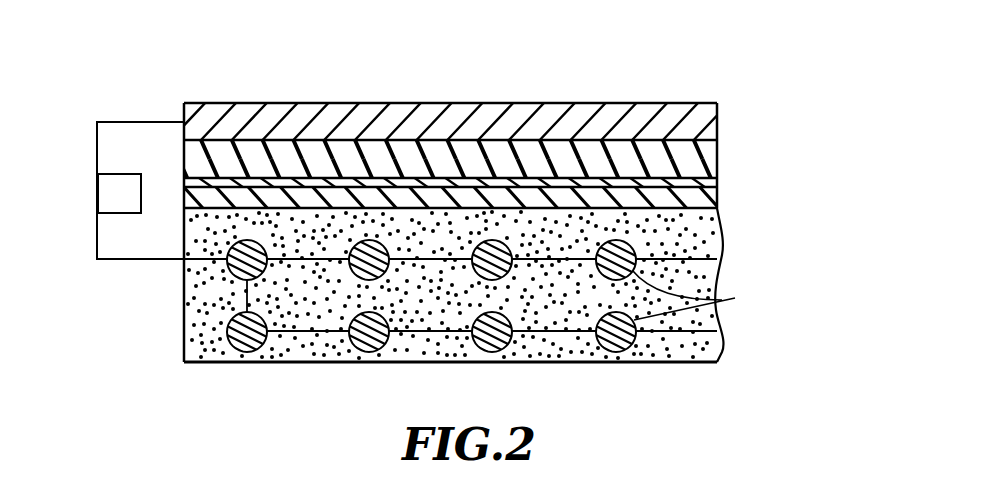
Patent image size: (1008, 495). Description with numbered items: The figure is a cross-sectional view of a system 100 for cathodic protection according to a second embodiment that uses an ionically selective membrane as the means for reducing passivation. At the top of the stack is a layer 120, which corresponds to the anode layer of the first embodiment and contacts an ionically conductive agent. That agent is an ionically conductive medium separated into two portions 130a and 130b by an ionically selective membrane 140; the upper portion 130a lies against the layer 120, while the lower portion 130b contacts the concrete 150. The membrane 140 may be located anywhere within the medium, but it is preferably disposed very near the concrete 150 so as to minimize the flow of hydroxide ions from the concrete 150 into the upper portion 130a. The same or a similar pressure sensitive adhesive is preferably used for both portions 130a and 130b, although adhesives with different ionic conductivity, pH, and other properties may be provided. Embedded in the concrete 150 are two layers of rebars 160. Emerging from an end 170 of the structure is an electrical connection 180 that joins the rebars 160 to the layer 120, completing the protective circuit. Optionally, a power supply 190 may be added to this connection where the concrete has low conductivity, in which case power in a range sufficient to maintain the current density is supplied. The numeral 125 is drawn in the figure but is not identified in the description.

The system 100 is at (370, 73).
The layer 120 is at (719, 108).
The first electrode layer 125 is at (718, 152).
The ionically conductive medium portion 130a is at (718, 165).
The ionically selective membrane 140 is at (718, 179).
The ionically conductive medium portion 130b is at (718, 190).
The concrete 150 is at (724, 240).
The rebars 160 is at (735, 298).
The end 170 is at (184, 312).
The electrical connection 180 is at (132, 122).
The power supply 190 is at (113, 174).